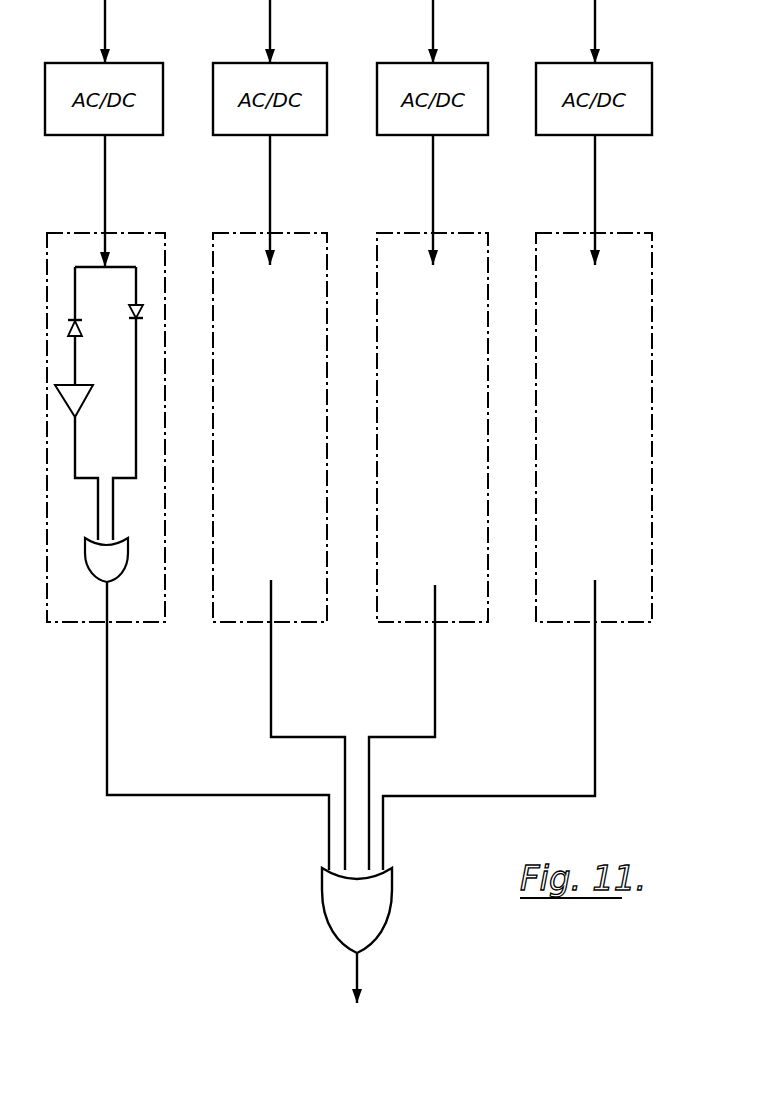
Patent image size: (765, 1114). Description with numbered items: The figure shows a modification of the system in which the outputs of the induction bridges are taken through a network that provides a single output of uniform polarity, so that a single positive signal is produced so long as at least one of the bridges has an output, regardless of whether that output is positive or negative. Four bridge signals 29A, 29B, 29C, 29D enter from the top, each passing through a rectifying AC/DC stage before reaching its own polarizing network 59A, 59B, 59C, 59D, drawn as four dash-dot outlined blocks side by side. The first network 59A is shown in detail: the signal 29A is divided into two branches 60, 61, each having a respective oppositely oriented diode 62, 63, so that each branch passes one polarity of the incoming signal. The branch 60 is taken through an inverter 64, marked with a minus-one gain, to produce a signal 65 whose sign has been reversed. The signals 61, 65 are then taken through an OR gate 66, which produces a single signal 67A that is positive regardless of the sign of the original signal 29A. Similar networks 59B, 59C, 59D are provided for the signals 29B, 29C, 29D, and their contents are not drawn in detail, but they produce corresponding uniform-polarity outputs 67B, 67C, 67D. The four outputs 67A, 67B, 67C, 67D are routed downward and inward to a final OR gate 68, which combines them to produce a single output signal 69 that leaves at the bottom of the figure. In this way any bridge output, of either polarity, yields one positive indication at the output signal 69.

The signal 29A is at (107, 36).
The signal 29B is at (272, 36).
The signal 29C is at (435, 36).
The signal 29D is at (597, 36).
The polarizing network 59A is at (112, 232).
The polarizing network 59B is at (294, 406).
The polarizing network 59C is at (456, 406).
The polarizing network 59D is at (618, 406).
The branch 60 is at (77, 283).
The branch 61 is at (138, 294).
The diode 62 is at (80, 330).
The diode 63 is at (140, 320).
The inverter 64 is at (84, 404).
The signal 65 is at (75, 468).
The OR gate 66 is at (118, 572).
The signal 67A is at (107, 700).
The output 67B is at (271, 692).
The output 67C is at (435, 725).
The output 67D is at (596, 722).
The OR gate 68 is at (392, 912).
The output signal 69 is at (360, 998).